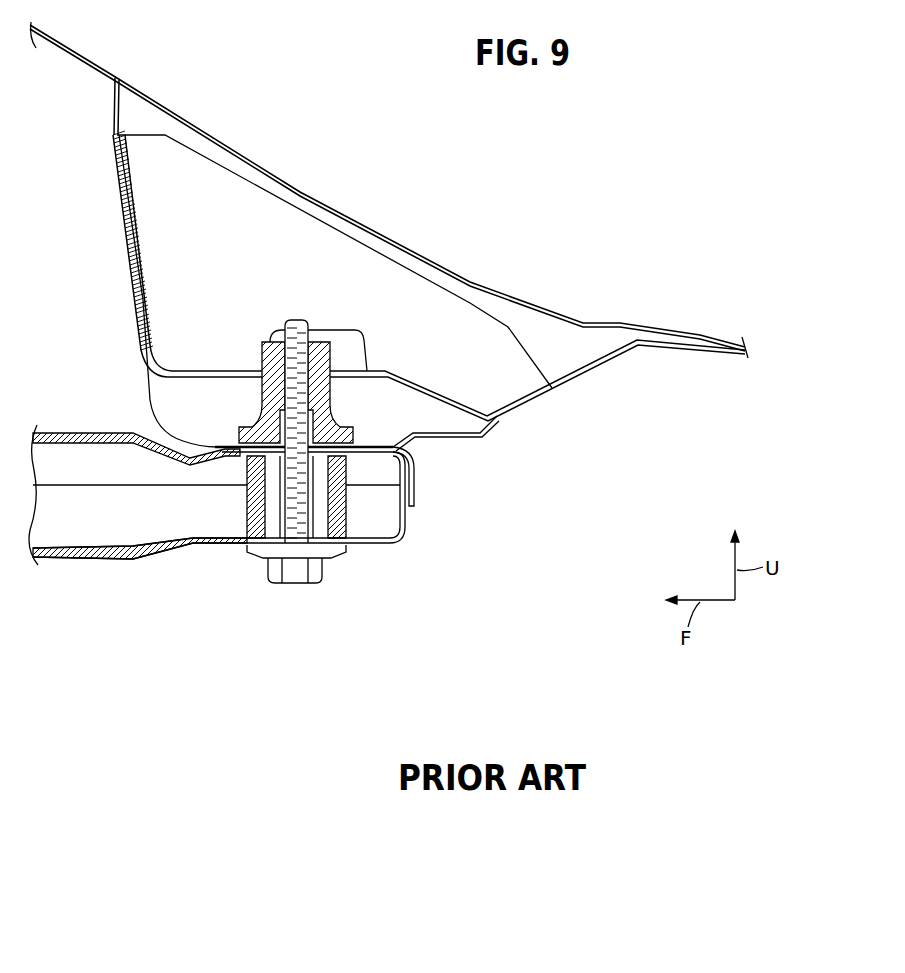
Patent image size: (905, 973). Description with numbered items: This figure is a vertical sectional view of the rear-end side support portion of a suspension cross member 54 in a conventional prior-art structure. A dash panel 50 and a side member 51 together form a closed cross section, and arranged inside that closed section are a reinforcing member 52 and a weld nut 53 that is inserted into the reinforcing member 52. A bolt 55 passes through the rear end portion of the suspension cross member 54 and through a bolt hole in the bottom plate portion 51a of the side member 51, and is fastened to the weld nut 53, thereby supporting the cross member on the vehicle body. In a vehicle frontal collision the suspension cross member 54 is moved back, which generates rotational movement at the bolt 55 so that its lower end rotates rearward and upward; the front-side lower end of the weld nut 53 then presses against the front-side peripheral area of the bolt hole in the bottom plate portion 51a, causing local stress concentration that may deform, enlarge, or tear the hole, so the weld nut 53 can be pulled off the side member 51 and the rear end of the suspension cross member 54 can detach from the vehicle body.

The dash panel 50 is at (153, 100).
The side member 51 is at (110, 118).
The bottom plate portion 51a is at (383, 446).
The reinforcing member 52 is at (185, 374).
The weld nut 53 is at (330, 398).
The suspension cross member 54 is at (72, 560).
The bolt 55 is at (292, 585).